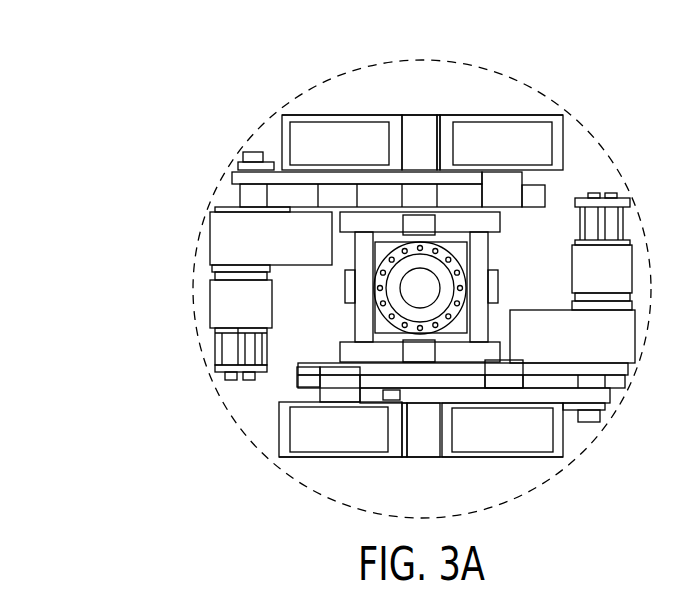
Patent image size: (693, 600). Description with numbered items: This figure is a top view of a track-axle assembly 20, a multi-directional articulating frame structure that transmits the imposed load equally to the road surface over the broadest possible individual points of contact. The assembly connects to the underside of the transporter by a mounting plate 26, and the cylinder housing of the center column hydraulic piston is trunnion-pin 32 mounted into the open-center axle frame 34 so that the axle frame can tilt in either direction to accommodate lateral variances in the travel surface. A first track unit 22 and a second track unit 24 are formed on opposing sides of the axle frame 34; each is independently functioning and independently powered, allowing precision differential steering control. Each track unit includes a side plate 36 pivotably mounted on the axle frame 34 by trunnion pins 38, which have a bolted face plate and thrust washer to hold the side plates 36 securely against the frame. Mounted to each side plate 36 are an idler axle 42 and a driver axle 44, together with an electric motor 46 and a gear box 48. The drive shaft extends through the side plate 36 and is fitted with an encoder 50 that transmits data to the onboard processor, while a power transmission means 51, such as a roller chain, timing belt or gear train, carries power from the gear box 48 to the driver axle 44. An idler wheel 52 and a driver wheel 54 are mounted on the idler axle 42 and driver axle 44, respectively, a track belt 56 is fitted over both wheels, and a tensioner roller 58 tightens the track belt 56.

The track-axle assembly 20 is at (178, 303).
The first track unit 22 is at (375, 113).
The second track unit 24 is at (450, 460).
The mounting plate 26 is at (77, 598).
The trunnion pin 32 is at (490, 255).
The open-center axle frame 34 is at (480, 316).
The side plate 36 is at (537, 195).
The trunnion pins 38 is at (430, 222).
The idler axle 42 is at (515, 178).
The driver axle 44 is at (435, 215).
The electric motor 46 is at (215, 315).
The gear box 48 is at (222, 225).
The encoder 50 is at (243, 157).
The power transmission means 51 is at (603, 393).
The idler wheel 52 is at (530, 133).
The driver wheel 54 is at (318, 128).
The track belt 56 is at (445, 128).
The tensioner roller 58 is at (422, 128).